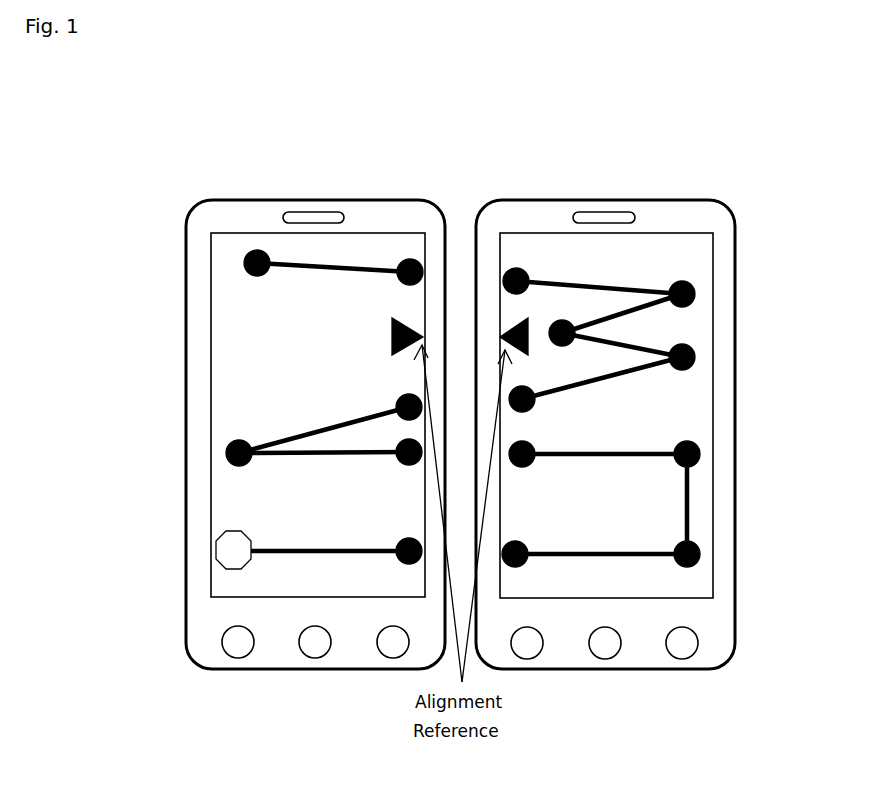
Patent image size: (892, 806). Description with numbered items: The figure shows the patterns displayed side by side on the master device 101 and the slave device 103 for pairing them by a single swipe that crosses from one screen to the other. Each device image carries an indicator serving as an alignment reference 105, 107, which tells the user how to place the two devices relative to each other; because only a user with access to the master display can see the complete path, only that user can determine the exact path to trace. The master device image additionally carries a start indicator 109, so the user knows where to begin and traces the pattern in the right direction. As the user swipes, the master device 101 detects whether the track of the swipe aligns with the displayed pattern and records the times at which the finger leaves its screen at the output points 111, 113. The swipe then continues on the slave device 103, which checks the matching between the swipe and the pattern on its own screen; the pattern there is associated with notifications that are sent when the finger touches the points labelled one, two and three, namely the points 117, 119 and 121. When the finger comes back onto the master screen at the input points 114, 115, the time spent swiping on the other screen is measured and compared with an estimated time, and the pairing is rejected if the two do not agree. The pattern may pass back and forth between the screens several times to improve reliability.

The master device 101 is at (357, 670).
The slave device 103 is at (647, 670).
The alignment reference 105 is at (391, 326).
The alignment reference 107 is at (530, 334).
The start indicator 109 is at (222, 568).
The output point 111 is at (397, 563).
The output point 113 is at (395, 403).
The input point 114 is at (395, 456).
The input point 115 is at (411, 258).
The point "1" of the pattern 117 is at (692, 359).
The point "2" of the pattern 119 is at (575, 333).
The point "3" of the pattern 121 is at (692, 292).